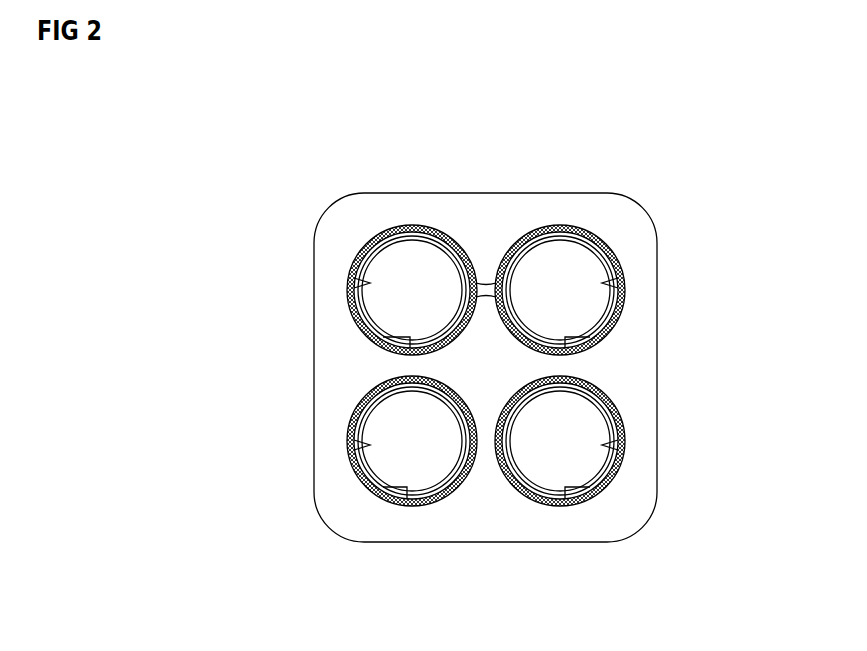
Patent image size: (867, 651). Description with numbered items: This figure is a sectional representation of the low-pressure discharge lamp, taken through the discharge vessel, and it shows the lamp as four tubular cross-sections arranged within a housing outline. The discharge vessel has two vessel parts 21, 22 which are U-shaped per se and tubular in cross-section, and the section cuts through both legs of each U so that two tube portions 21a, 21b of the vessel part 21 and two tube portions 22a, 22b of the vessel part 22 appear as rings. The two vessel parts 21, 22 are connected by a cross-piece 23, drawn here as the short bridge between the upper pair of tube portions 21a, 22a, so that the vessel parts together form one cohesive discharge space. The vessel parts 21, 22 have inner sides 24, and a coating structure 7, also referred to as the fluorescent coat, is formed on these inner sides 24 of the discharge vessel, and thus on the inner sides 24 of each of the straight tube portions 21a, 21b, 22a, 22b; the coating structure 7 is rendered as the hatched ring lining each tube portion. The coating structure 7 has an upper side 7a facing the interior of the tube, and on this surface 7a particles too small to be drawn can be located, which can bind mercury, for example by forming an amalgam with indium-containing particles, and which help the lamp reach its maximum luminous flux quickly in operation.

The coating structure 7 is at (380, 240).
The upper side 7a is at (383, 337).
The vessel part 21 is at (609, 244).
The tube portion 21a is at (559, 225).
The tube portion 21b is at (559, 506).
The vessel part 22 is at (360, 244).
The tube portion 22a is at (412, 225).
The tube portion 22b is at (412, 506).
The cross-piece 23 is at (485, 283).
The inner sides 24 is at (363, 288).